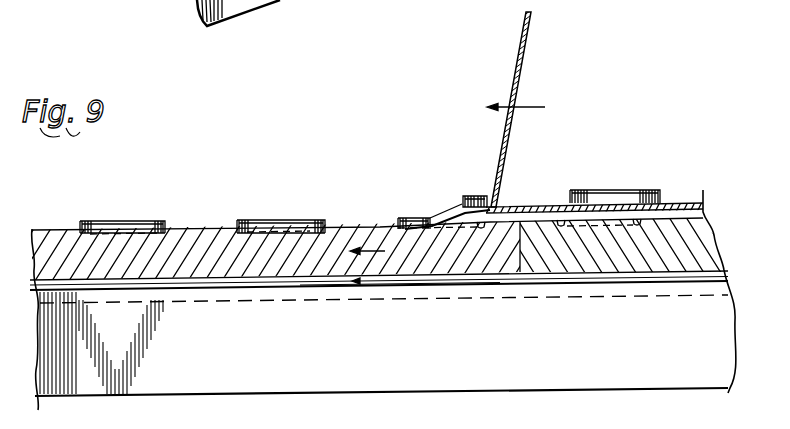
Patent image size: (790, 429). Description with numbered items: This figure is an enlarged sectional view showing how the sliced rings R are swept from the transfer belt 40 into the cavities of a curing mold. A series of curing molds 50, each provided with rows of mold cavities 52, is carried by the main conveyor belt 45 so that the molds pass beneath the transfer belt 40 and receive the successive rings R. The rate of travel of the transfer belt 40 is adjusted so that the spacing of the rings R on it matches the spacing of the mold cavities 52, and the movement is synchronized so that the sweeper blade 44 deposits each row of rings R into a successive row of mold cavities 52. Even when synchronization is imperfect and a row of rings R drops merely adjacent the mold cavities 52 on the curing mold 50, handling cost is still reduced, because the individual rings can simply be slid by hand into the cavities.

The transfer belt 40 is at (528, 207).
The sweeper blade 44 is at (517, 80).
The main conveyor belt 45 is at (410, 280).
The curing mold 50 is at (257, 266).
The mold cavity 52 is at (482, 218).
The ring R is at (460, 198).